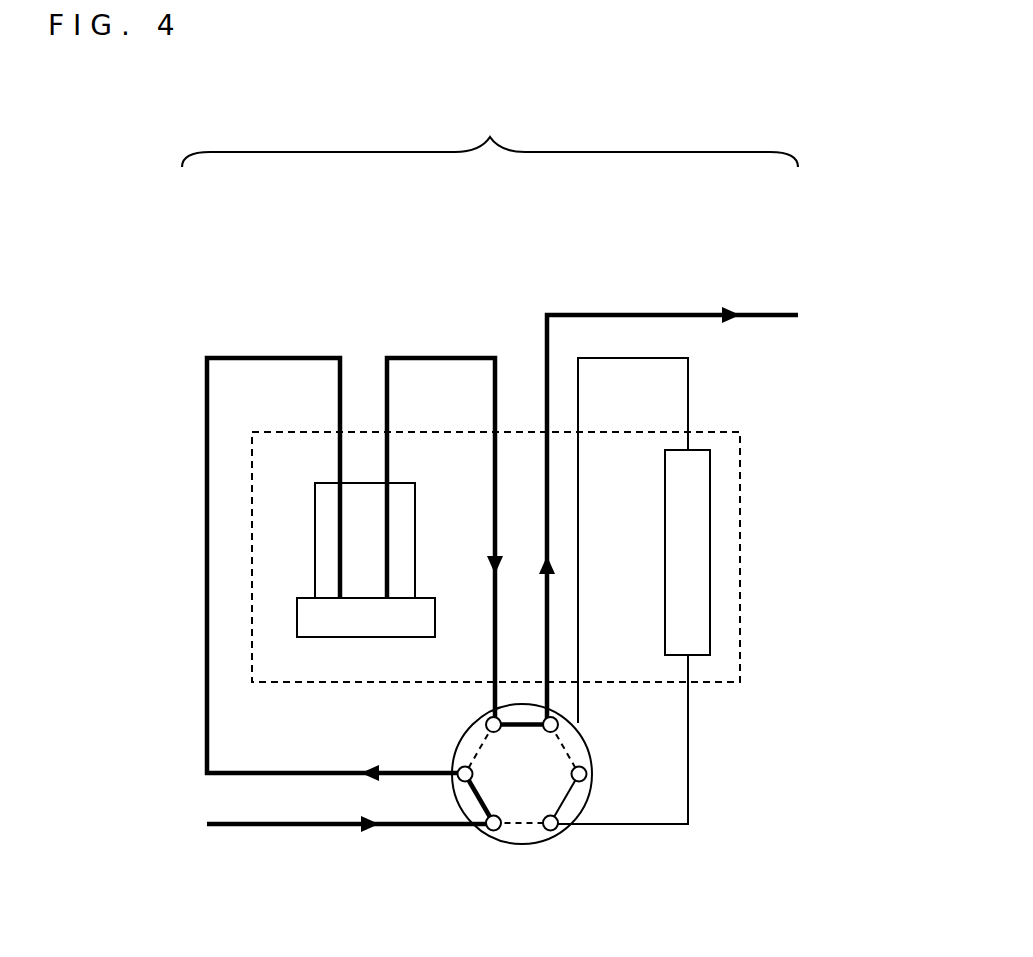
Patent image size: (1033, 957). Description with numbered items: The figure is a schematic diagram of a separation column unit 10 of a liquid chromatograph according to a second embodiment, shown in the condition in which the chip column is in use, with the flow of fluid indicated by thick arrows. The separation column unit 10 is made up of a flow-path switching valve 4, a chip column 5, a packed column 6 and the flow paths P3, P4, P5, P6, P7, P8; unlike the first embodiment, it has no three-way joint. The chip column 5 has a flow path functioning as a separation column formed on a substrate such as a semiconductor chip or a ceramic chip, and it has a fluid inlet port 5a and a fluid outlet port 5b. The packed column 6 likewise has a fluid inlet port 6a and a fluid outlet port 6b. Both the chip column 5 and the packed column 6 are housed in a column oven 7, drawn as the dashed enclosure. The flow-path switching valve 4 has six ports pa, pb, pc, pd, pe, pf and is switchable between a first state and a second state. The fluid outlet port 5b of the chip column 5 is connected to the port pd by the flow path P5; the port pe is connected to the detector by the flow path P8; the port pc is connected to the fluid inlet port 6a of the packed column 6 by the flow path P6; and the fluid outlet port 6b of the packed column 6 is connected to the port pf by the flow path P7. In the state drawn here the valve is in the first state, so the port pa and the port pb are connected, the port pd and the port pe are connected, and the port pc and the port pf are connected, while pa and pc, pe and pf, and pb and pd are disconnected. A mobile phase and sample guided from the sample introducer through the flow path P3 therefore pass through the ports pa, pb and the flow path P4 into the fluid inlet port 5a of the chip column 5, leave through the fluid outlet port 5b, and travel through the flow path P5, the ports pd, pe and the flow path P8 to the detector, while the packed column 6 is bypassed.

The separation column unit 10 is at (490, 133).
The flow-path switching valve 4 is at (514, 807).
The chip column 5 is at (315, 541).
The fluid inlet port 5a is at (339, 482).
The fluid outlet port 5b is at (388, 482).
The packed column 6 is at (665, 540).
The fluid inlet port 6a is at (688, 655).
The fluid outlet port 6b is at (688, 450).
The column oven 7 is at (743, 532).
The flow path P3 is at (262, 826).
The flow path P4 is at (268, 771).
The flow path P5 is at (387, 420).
The flow path P6 is at (690, 787).
The flow path P7 is at (688, 405).
The flow path P8 is at (636, 313).
The port pa is at (488, 831).
The port pb is at (460, 768).
The port pc is at (556, 831).
The port pd is at (489, 716).
The port pe is at (556, 716).
The port pf is at (586, 768).